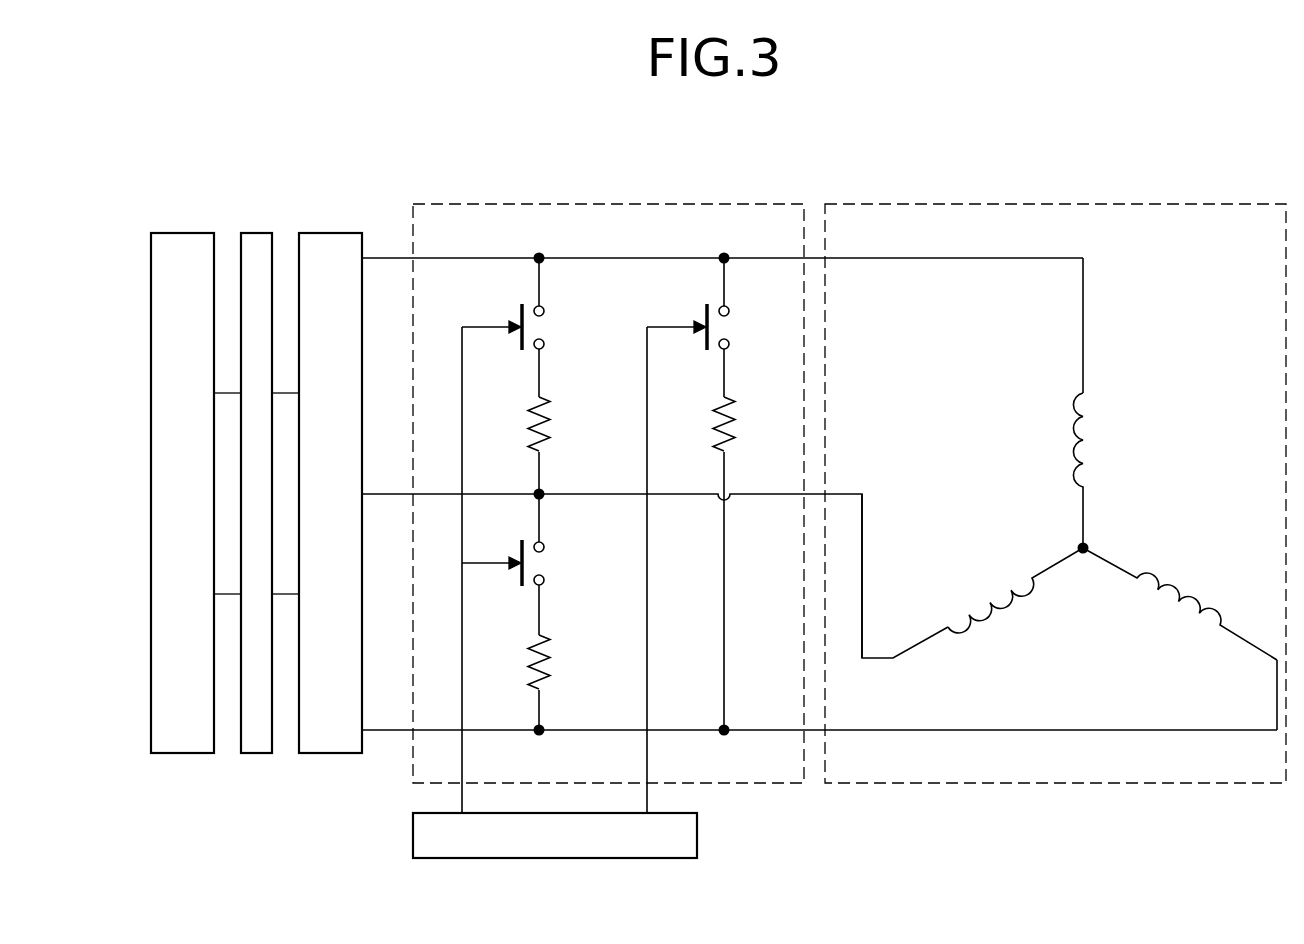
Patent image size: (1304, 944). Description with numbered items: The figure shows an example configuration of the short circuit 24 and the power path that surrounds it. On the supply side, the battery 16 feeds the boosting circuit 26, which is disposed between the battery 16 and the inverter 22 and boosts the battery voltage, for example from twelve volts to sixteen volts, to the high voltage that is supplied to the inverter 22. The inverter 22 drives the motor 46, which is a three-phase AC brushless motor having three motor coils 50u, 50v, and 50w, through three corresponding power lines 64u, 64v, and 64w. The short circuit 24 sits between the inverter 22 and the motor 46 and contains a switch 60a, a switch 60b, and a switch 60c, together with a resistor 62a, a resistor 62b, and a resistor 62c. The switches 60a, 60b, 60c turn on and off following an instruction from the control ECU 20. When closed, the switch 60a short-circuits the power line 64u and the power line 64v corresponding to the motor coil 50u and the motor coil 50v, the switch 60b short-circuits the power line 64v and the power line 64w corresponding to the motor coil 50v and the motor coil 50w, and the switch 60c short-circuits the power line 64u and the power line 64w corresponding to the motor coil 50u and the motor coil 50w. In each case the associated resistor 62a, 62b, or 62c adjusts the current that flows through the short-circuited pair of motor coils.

The battery 16 is at (180, 232).
The boosting circuit 26 is at (258, 232).
The inverter 22 is at (322, 232).
The short circuit 24 is at (646, 203).
The motor 46 is at (1068, 203).
The control ECU 20 is at (412, 826).
The switch 60a is at (551, 326).
The switch 60b is at (551, 562).
The switch 60c is at (736, 326).
The resistor 62a is at (549, 428).
The resistor 62b is at (549, 662).
The resistor 62c is at (734, 428).
The power line 64u is at (918, 260).
The power line 64v is at (863, 532).
The power line 64w is at (1063, 728).
The motor coil 50u is at (1075, 392).
The motor coil 50v is at (951, 636).
The motor coil 50w is at (1226, 618).